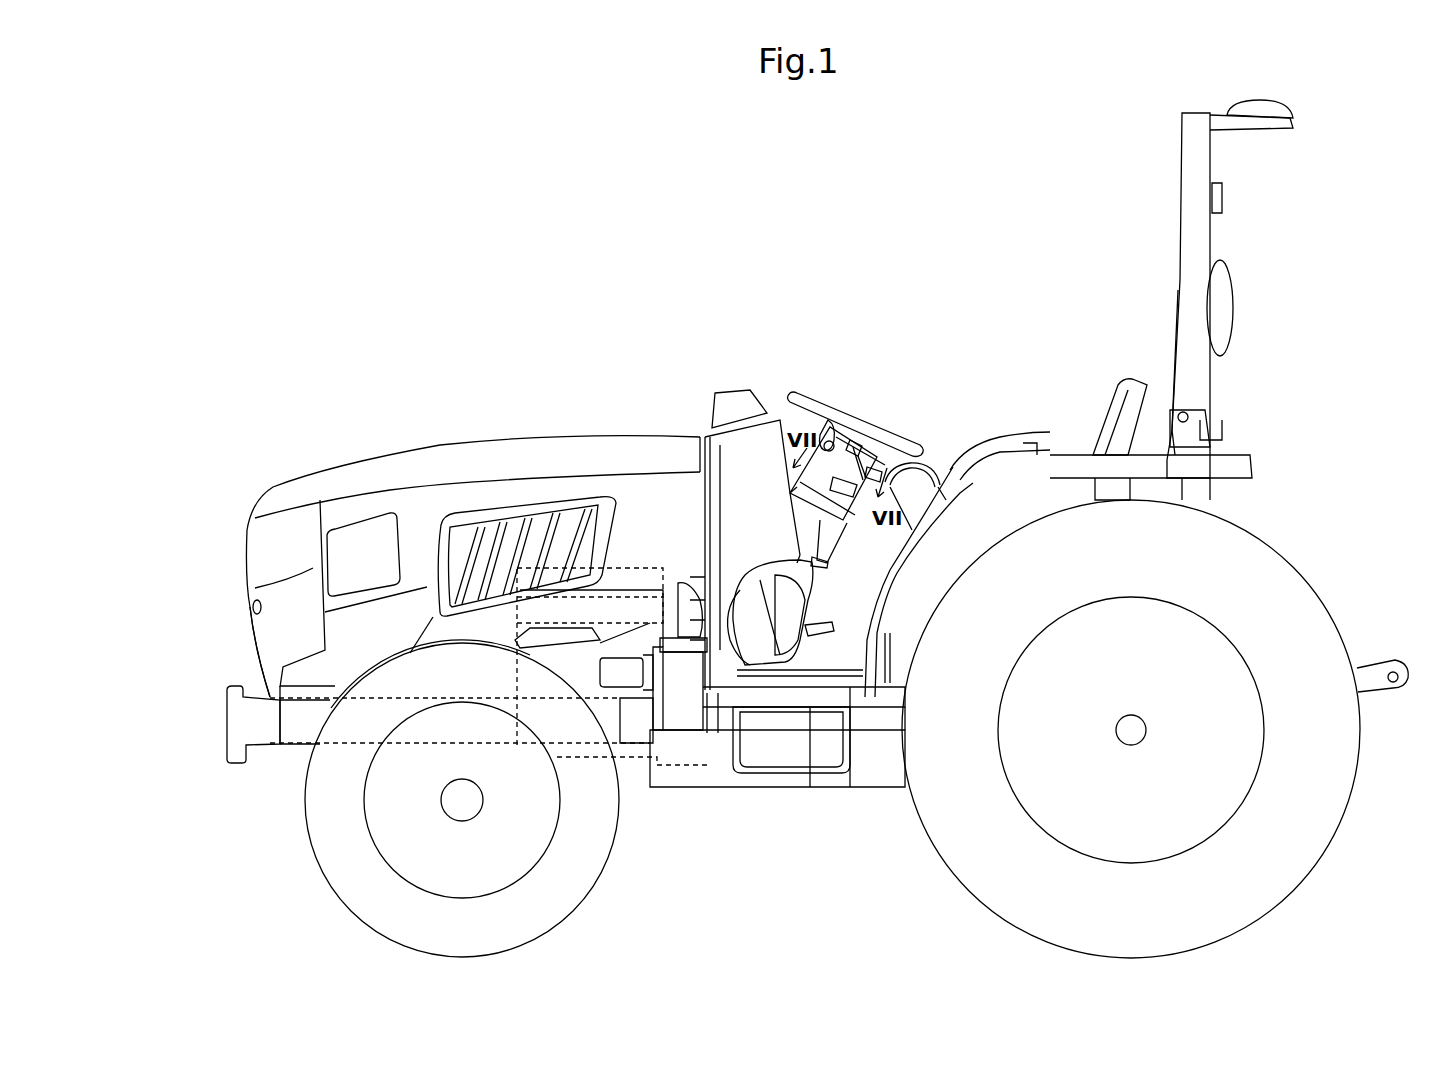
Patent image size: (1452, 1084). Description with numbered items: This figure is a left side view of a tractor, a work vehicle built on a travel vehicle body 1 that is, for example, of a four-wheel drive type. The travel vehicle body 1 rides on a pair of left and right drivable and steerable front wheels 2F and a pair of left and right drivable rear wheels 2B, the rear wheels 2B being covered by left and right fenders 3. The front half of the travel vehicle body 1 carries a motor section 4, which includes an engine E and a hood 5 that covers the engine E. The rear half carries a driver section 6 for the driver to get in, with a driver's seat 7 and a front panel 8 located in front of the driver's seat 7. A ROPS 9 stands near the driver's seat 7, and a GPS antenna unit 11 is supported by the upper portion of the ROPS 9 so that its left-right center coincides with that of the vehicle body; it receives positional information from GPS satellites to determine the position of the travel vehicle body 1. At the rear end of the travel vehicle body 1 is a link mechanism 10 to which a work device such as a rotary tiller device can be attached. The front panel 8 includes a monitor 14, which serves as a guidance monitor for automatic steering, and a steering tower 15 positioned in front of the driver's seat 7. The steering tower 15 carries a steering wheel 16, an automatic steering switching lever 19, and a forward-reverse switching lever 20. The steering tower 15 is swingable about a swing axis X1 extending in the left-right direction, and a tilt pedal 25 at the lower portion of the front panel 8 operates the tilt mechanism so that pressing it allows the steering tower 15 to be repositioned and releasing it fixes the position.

The travel vehicle body 1 is at (205, 714).
The front wheels 2F is at (612, 865).
The rear wheels 2B is at (1325, 848).
The fenders 3 is at (1075, 465).
The motor section 4 is at (468, 432).
The hood 5 is at (353, 478).
The driver section 6 is at (937, 365).
The driver's seat 7 is at (1125, 388).
The front panel 8 is at (768, 393).
The ROPS 9 is at (1190, 200).
The link mechanism 10 is at (1387, 665).
The GPS antenna unit 11 is at (1265, 110).
The monitor 14 is at (735, 397).
The steering tower 15 is at (850, 535).
The steering wheel 16 is at (812, 395).
The automatic steering switching lever 19 is at (826, 440).
The forward-reverse switching lever 20 is at (858, 445).
The tilt pedal 25 is at (818, 613).
The engine E is at (640, 568).
The swing axis X1 is at (798, 560).